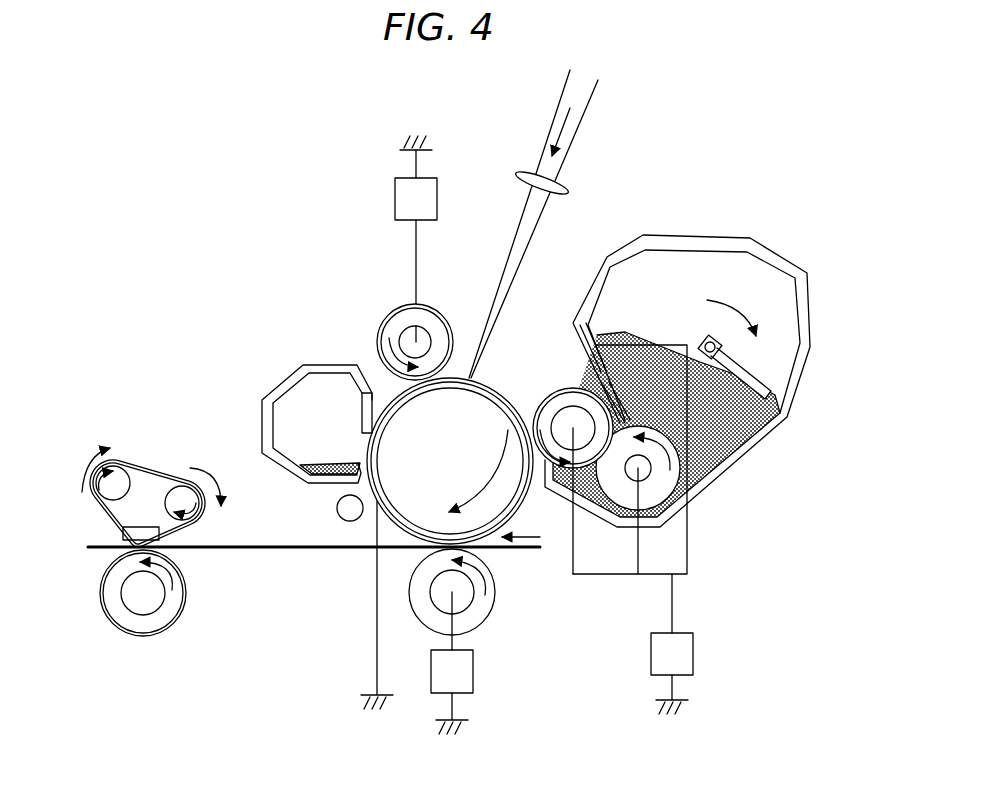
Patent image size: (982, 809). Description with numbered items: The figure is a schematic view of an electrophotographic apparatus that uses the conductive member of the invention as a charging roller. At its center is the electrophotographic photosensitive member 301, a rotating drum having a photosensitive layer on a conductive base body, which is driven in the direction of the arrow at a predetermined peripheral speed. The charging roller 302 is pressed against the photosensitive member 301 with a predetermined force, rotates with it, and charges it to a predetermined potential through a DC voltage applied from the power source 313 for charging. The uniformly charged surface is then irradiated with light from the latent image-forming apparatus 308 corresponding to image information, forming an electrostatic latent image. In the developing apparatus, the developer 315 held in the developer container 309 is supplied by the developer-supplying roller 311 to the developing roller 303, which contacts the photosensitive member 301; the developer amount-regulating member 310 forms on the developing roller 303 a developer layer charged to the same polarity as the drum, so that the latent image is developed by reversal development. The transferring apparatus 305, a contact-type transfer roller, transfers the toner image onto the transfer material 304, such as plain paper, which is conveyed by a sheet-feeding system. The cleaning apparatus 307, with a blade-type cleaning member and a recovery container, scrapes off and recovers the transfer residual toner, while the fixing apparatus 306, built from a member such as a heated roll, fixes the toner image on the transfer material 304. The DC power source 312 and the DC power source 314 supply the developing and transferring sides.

The electrophotographic photosensitive member 301 is at (483, 535).
The charging roller 302 is at (388, 325).
The developing roller 303 is at (568, 472).
The transfer material 304 is at (290, 550).
The transferring apparatus 305 is at (480, 617).
The fixing apparatus 306 is at (160, 470).
The cleaning apparatus 307 is at (362, 422).
The latent image-forming apparatus 308 is at (540, 180).
The developer container 309 is at (695, 349).
The developer amount-regulating member 310 is at (595, 378).
The developer-supplying roller 311 is at (673, 480).
The DC power source 312 is at (693, 655).
The power source for charging 313 is at (395, 193).
The DC power source 314 is at (473, 670).
The developer 315 is at (743, 428).